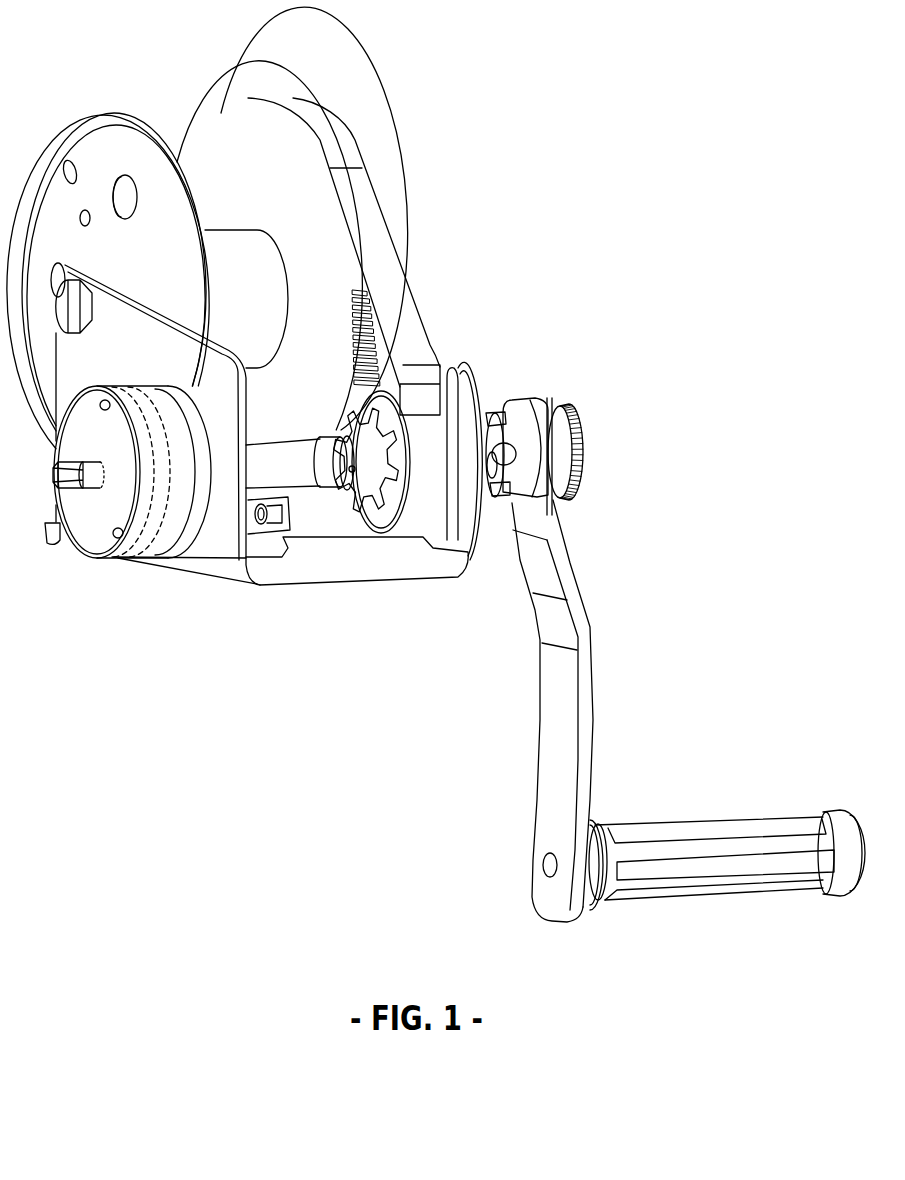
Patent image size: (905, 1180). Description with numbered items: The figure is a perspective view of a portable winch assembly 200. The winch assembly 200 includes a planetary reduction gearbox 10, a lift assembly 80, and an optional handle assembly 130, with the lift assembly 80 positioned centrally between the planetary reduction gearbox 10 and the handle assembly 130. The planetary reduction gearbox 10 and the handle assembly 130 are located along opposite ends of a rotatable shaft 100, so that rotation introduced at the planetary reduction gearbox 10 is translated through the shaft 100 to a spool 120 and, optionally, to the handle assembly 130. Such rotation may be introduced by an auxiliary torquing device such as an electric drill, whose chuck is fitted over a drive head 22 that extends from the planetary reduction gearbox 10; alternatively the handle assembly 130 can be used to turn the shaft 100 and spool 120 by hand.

The winch assembly 200 is at (599, 126).
The spool 120 is at (253, 252).
The rotatable shaft 100 is at (290, 463).
The lift assembly 80 is at (463, 575).
The planetary reduction gearbox 10 is at (111, 521).
The drive head 22 is at (90, 479).
The handle assembly 130 is at (610, 698).